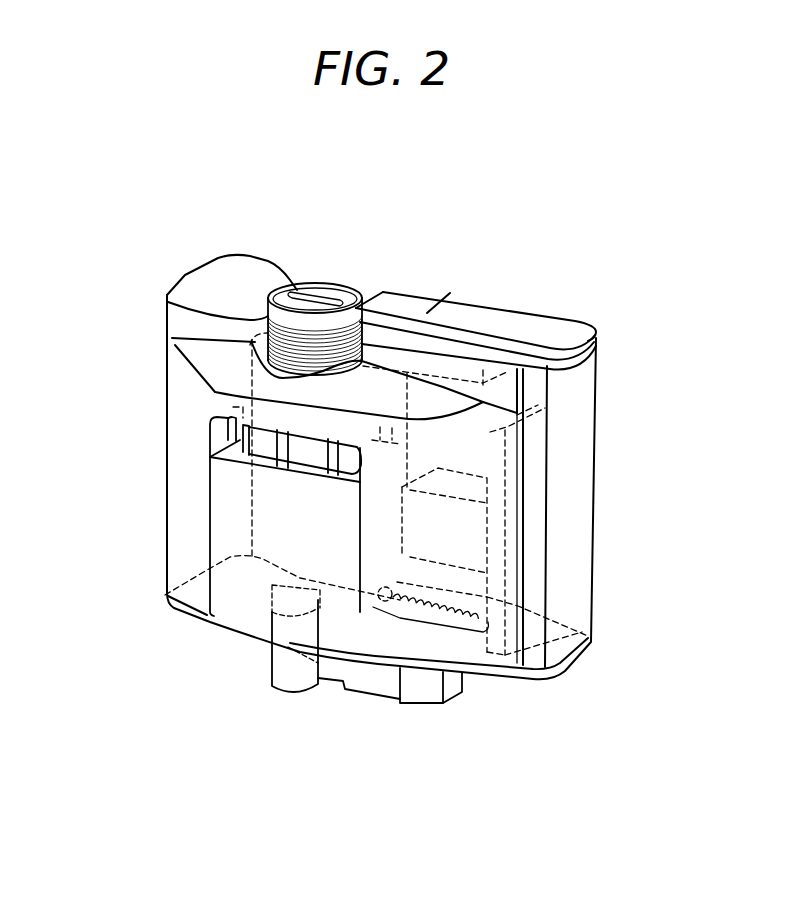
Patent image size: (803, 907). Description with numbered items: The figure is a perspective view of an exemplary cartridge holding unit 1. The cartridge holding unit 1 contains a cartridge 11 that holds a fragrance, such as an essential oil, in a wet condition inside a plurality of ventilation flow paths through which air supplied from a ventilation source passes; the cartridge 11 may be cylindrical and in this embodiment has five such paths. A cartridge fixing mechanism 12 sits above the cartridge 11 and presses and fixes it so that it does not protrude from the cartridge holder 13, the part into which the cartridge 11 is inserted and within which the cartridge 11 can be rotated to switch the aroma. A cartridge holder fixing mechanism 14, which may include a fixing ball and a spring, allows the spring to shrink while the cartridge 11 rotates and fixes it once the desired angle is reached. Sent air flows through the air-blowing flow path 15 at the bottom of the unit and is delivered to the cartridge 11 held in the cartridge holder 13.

The cartridge holding unit 1 is at (607, 247).
The cartridge 11 is at (347, 285).
The cartridge fixing mechanism 12 is at (497, 306).
The cartridge holder 13 is at (260, 485).
The cartridge holder fixing mechanism 14 is at (428, 627).
The air-blowing flow path 15 is at (285, 670).